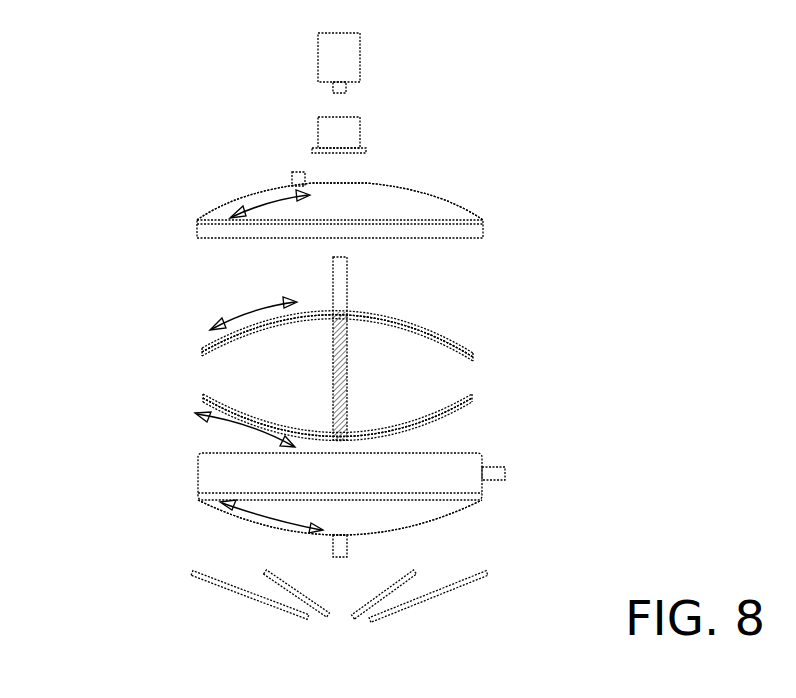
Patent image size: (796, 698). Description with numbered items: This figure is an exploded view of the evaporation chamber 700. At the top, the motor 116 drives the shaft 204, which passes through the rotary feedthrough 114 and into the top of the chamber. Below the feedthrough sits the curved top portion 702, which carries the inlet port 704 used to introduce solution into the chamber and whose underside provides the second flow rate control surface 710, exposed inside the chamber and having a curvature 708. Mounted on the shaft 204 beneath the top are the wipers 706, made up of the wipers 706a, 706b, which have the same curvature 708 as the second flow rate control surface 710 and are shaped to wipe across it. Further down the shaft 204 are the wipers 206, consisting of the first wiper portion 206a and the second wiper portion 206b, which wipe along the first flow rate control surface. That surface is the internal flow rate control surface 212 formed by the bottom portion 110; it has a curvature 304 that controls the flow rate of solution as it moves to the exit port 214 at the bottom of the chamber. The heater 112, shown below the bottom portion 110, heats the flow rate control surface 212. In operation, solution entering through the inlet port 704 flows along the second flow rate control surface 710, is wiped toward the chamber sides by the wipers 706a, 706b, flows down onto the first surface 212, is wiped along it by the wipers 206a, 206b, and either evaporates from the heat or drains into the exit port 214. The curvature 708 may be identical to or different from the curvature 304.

The evaporation chamber 700 is at (113, 250).
The motor 116 is at (318, 52).
The rotary feedthrough 114 is at (318, 135).
The inlet port 704 is at (292, 178).
The curved top portion 702 is at (427, 198).
The second flow rate control surface 710 is at (400, 192).
The curvature 708 is at (270, 207).
The shaft 204 is at (335, 373).
The wipers 706 is at (465, 342).
The wiper 706a is at (217, 343).
The wiper 706b is at (428, 328).
The wipers 206 is at (468, 408).
The first wiper portion 206a is at (245, 423).
The second wiper portion 206b is at (437, 420).
The curvature 304 is at (222, 420).
The bottom portion 110 is at (220, 507).
The internal flow rate control surface 212 is at (410, 514).
The exit port 214 is at (333, 556).
The heater 112 is at (447, 586).